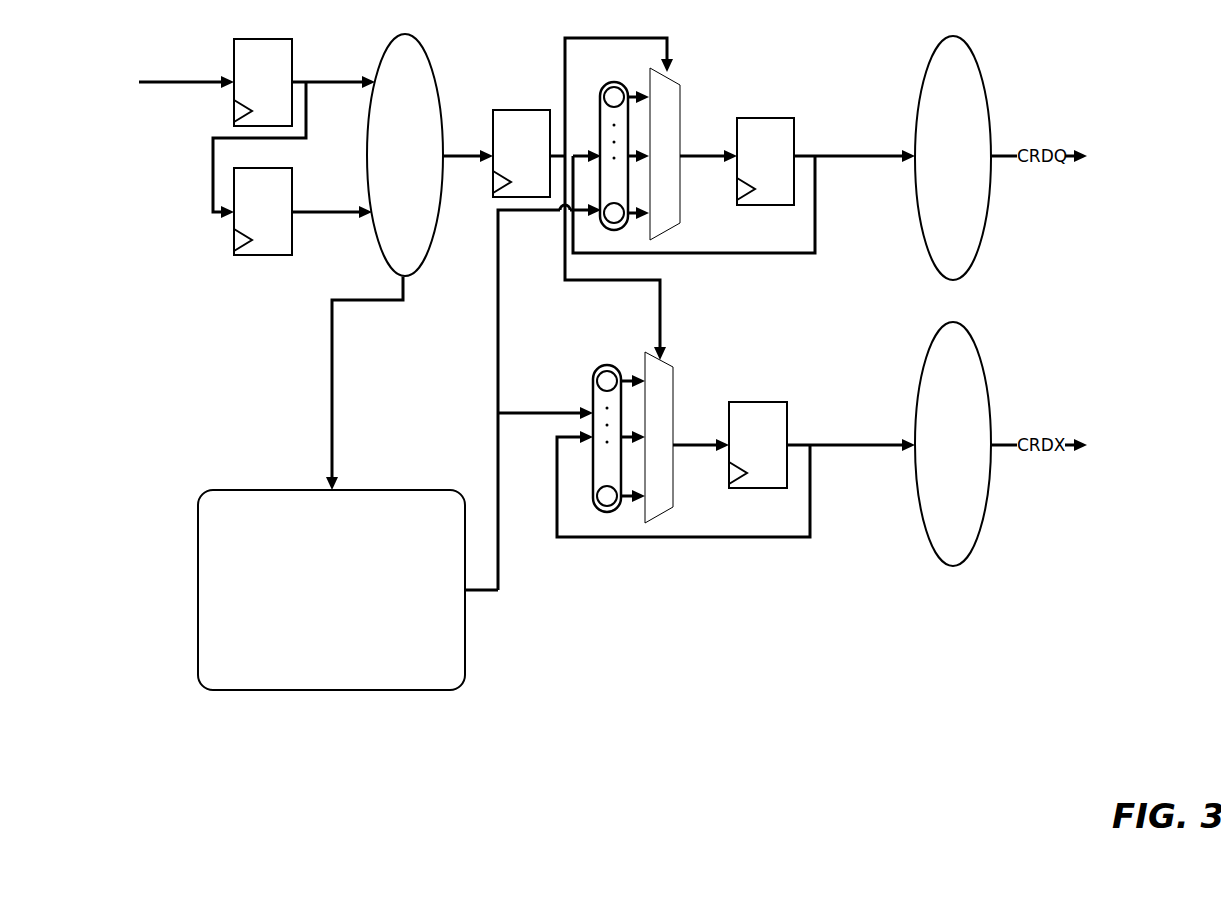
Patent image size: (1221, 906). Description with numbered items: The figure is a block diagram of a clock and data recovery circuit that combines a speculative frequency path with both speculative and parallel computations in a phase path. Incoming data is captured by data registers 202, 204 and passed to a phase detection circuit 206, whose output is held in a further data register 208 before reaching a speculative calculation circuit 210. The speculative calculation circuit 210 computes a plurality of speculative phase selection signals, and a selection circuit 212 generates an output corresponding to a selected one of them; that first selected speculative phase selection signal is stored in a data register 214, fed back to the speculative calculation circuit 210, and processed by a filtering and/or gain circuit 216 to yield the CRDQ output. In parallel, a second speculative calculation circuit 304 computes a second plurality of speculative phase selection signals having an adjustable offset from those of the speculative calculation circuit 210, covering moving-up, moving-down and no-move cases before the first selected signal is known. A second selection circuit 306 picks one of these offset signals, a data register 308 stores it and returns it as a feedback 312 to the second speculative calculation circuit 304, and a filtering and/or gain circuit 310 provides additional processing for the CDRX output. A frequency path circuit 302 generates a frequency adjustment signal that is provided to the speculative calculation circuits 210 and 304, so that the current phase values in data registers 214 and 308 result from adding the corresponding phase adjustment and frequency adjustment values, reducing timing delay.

The data register 202 is at (263, 48).
The data register 204 is at (280, 178).
The phase detection circuit 206 is at (417, 48).
The data register 208 is at (500, 111).
The speculative calculation circuit 210 is at (607, 82).
The selection circuit 212 is at (672, 85).
The data register 214 is at (768, 121).
The filtering and/or gain circuit 216 is at (970, 62).
The frequency path circuit 302 is at (357, 492).
The second speculative calculation circuit 304 is at (605, 365).
The second selection circuit 306 is at (667, 368).
The data register 308 is at (753, 405).
The filtering and/or gain circuit 310 is at (970, 357).
The feedback 312 is at (703, 536).